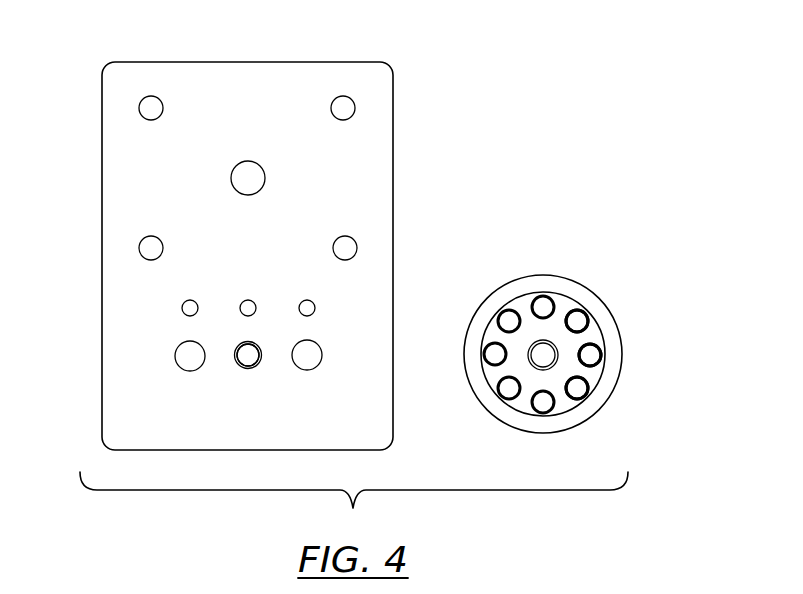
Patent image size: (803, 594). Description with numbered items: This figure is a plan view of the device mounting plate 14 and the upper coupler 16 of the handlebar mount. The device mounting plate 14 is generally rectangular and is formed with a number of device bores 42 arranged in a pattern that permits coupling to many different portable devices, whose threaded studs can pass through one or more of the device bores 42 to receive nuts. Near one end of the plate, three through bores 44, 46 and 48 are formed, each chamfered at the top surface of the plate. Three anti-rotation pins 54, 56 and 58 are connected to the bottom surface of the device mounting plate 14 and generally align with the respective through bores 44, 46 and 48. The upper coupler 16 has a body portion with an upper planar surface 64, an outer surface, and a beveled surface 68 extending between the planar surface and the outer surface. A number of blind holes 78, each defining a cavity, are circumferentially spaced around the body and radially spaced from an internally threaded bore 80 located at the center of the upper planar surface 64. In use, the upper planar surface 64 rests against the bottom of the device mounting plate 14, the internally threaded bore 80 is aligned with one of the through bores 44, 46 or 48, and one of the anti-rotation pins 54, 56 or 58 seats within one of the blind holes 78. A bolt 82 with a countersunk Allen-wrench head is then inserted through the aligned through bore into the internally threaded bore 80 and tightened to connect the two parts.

The device mounting plate 14 is at (447, 53).
The upper coupler 16 is at (658, 296).
The device bores 42 is at (265, 168).
The through bore 44 is at (322, 355).
The through bore 46 is at (250, 368).
The through bore 48 is at (187, 370).
The anti-rotation pin 54 is at (315, 305).
The anti-rotation pin 56 is at (257, 300).
The anti-rotation pin 58 is at (182, 304).
The upper planar surface 64 is at (545, 328).
The beveled surface 68 is at (517, 418).
The blind holes 78 is at (590, 324).
The internally threaded bore 80 is at (538, 340).
The bolt 82 is at (247, 354).